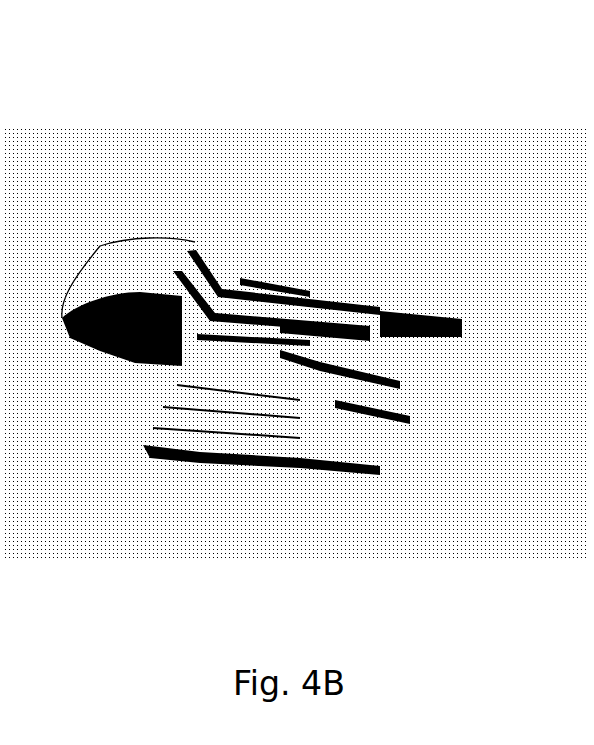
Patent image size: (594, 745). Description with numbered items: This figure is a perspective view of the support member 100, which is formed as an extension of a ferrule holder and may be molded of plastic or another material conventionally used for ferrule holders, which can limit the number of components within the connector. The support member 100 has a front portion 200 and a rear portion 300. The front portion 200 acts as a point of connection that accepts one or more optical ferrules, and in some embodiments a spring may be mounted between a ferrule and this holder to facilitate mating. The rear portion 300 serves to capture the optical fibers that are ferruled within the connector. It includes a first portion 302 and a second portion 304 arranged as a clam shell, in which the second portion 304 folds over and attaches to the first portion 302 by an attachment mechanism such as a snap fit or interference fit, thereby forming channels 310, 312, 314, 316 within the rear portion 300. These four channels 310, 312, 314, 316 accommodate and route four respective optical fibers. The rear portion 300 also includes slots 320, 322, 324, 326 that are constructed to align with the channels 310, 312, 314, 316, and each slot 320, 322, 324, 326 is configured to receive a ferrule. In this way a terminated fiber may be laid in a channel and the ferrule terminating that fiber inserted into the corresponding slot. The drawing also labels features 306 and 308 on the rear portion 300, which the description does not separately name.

The support member 100 is at (323, 67).
The front portion 200 is at (150, 214).
The rear portion 300 is at (387, 218).
The first portion 302 is at (430, 313).
The second portion 304 is at (235, 460).
The side tab 306 is at (438, 352).
The slot 308 is at (370, 337).
The channel 310 is at (342, 302).
The channel 312 is at (273, 303).
The channel 314 is at (305, 335).
The channel 316 is at (235, 350).
The slot 320 is at (235, 267).
The slot 322 is at (198, 253).
The slot 324 is at (185, 272).
The slot 326 is at (175, 350).